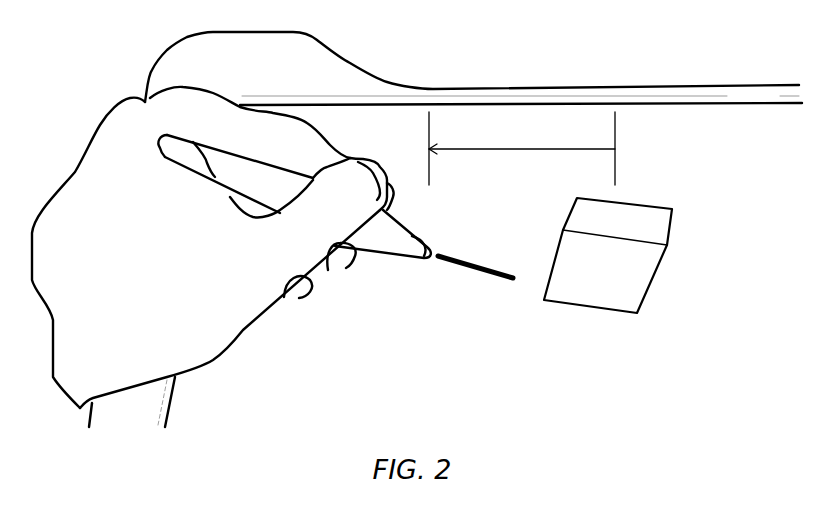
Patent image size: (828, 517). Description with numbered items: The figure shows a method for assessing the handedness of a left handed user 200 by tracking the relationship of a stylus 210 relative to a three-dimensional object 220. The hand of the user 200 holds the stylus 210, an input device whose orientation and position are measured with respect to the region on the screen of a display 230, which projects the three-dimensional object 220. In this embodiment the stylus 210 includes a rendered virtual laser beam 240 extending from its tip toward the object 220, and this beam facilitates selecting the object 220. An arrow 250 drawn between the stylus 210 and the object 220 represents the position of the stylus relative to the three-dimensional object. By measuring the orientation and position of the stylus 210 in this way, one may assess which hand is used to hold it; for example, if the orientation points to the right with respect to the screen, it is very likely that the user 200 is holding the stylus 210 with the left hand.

The left handed user 200 is at (168, 275).
The stylus 210 is at (393, 246).
The 3D object 220 is at (617, 304).
The display 230 is at (717, 170).
The rendered virtual laser beam 240 is at (473, 270).
The arrow 250 is at (518, 148).